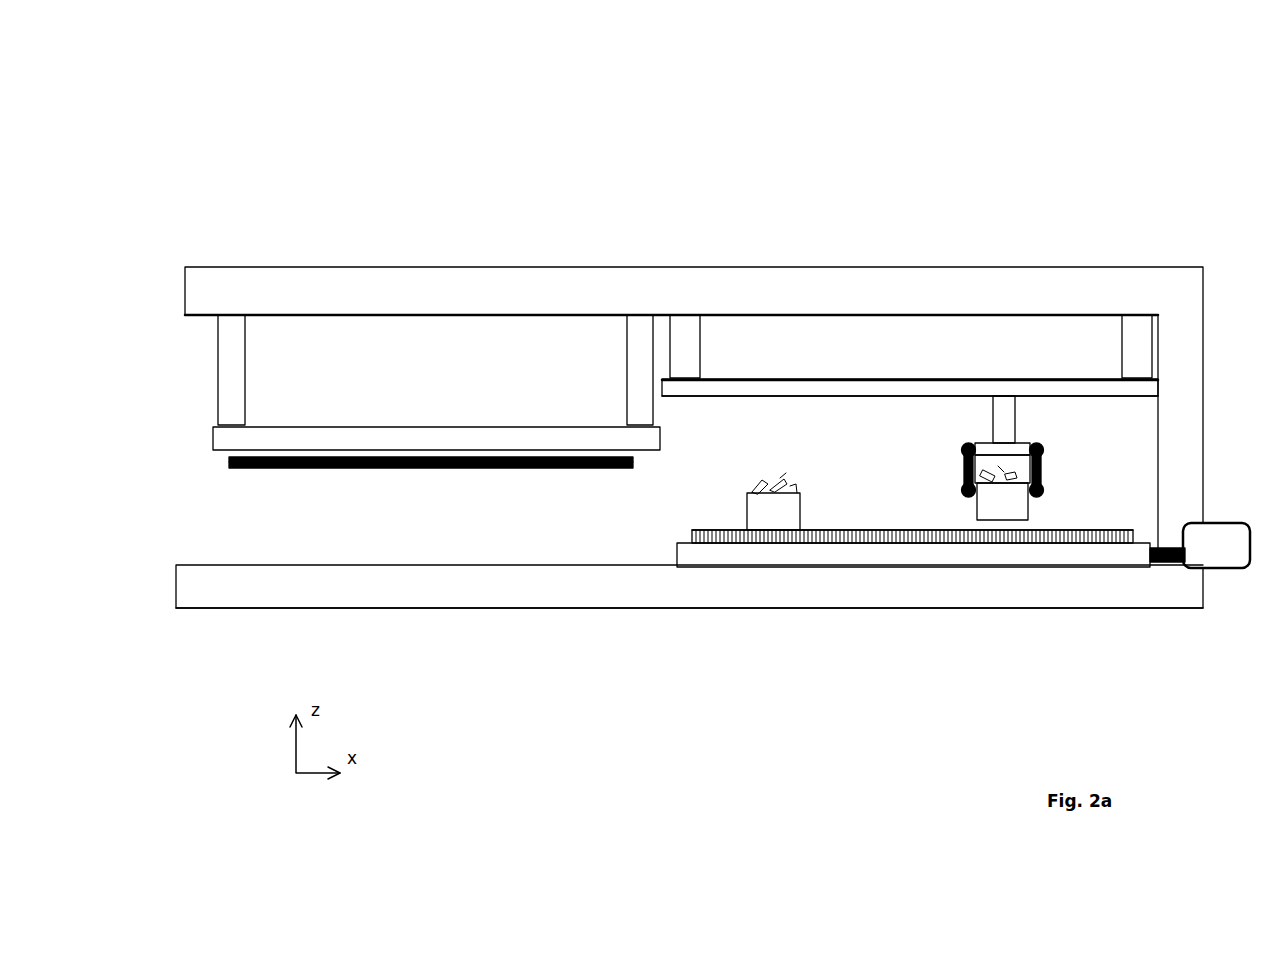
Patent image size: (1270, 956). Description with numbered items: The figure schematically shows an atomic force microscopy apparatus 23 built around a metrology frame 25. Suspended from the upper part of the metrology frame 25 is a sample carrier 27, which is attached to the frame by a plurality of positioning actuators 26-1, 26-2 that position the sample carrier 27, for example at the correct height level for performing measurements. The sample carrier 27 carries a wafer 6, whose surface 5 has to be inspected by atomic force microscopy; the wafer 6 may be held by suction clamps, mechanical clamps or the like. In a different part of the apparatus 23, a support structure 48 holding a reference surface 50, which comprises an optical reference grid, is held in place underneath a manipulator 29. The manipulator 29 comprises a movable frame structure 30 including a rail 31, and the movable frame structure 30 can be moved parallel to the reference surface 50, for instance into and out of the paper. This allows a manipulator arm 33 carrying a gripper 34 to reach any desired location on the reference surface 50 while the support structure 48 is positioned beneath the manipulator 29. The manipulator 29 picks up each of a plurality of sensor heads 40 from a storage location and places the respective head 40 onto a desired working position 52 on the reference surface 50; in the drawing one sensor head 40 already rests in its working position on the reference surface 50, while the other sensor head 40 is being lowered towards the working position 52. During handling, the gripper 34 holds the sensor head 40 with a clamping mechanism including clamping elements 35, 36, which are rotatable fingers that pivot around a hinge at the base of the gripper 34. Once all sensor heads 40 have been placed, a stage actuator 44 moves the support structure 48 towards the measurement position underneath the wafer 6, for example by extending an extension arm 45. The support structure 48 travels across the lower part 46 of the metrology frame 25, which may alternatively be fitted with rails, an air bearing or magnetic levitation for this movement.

The atomic force microscopy apparatus 23 is at (547, 136).
The metrology frame 25 is at (328, 283).
The positioning actuator 26-1 is at (230, 380).
The positioning actuator 26-2 is at (640, 366).
The sample carrier 27 is at (228, 440).
The wafer 6 is at (270, 472).
The surface 5 is at (342, 472).
The movable frame structure 30 is at (700, 344).
The manipulator 29 is at (838, 380).
The rail 31 is at (893, 397).
The manipulator arm 33 is at (1012, 418).
The gripper 34 is at (985, 447).
The clamping element 35 is at (964, 468).
The clamping element 36 is at (1041, 468).
The sensor head 40 is at (975, 505).
The reference surface 50 is at (708, 530).
The working position 52 is at (1000, 530).
The support structure 48 is at (680, 558).
The extension arm 45 is at (1172, 548).
The stage actuator 44 is at (1232, 546).
The lower part 46 is at (673, 594).